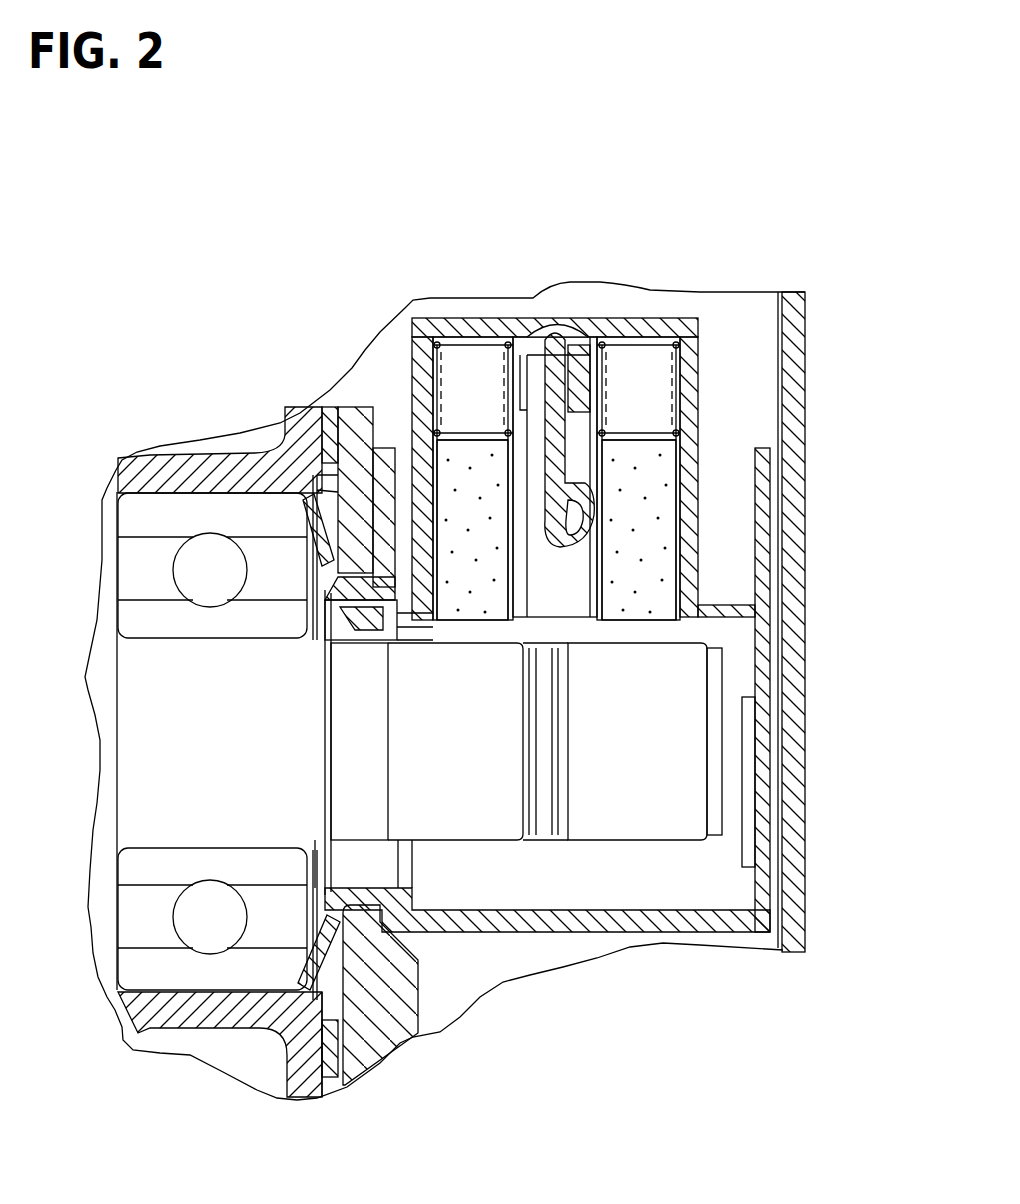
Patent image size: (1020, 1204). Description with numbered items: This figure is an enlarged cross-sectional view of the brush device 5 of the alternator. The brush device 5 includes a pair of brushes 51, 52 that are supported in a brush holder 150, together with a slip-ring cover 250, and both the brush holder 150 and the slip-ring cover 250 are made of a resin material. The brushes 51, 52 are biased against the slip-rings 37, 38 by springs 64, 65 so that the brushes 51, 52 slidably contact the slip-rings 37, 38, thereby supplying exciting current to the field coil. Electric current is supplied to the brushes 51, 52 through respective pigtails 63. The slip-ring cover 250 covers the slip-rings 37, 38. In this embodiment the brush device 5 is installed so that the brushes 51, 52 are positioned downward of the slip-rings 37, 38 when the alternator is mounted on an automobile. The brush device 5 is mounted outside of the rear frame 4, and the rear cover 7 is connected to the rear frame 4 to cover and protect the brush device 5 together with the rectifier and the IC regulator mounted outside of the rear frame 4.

The rear frame 4 is at (400, 1032).
The brush device 5 is at (740, 378).
The rear cover 7 is at (800, 935).
The slip-ring 37 is at (488, 822).
The slip-ring 38 is at (687, 822).
The brush 51 is at (490, 563).
The brush 52 is at (655, 590).
The pigtail 63 is at (560, 432).
The spring 64 is at (458, 332).
The spring 65 is at (630, 355).
The brush holder 150 is at (690, 433).
The slip-ring cover 250 is at (757, 925).